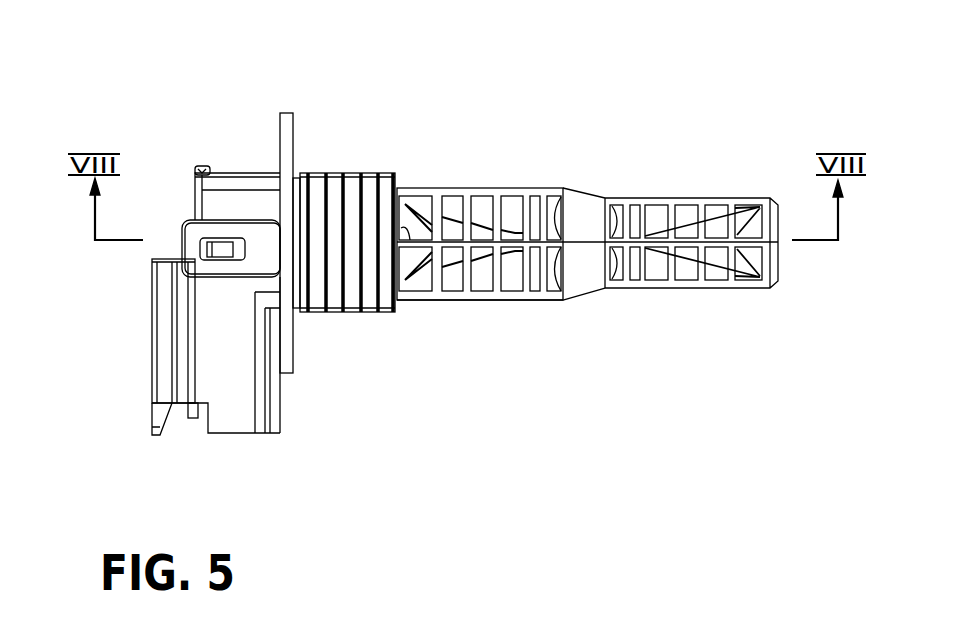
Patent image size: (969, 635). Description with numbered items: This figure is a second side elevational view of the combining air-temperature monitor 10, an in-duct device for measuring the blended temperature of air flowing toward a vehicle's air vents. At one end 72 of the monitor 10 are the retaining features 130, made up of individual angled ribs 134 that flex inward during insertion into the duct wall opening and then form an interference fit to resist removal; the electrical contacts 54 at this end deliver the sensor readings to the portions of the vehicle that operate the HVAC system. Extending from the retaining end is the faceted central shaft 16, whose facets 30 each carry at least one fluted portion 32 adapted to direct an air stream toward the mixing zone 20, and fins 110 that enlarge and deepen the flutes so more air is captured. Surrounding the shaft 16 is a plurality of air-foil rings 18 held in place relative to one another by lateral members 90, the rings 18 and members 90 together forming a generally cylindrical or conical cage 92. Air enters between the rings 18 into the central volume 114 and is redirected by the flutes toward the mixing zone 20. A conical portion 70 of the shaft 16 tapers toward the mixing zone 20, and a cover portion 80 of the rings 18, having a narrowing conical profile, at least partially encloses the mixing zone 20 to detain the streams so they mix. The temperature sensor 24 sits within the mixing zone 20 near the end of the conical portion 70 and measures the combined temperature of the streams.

The combining air-temperature monitor 10 is at (257, 62).
The retaining features 130 is at (352, 152).
The ribs 134 is at (336, 300).
The electrical contacts 54 is at (192, 423).
The lateral members 90 is at (487, 188).
The faceted central shaft 16 is at (537, 234).
The fluted portion 32 is at (444, 232).
The facet 30 is at (424, 262).
The cage 92 is at (488, 311).
The mixing zone 20 is at (594, 200).
The cover portion 80 is at (580, 277).
The air-foil rings 18 is at (673, 268).
The end 72 is at (612, 236).
The temperature sensor 24 is at (637, 240).
The central volume 114 is at (656, 277).
The fins 110 is at (717, 253).
The conical portion 70 is at (763, 254).